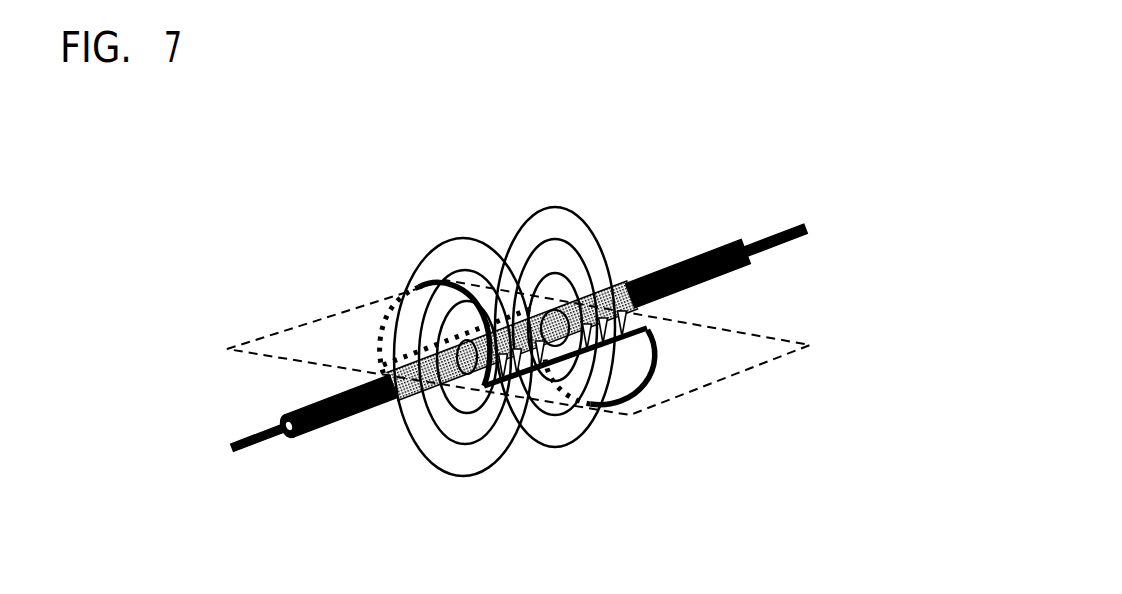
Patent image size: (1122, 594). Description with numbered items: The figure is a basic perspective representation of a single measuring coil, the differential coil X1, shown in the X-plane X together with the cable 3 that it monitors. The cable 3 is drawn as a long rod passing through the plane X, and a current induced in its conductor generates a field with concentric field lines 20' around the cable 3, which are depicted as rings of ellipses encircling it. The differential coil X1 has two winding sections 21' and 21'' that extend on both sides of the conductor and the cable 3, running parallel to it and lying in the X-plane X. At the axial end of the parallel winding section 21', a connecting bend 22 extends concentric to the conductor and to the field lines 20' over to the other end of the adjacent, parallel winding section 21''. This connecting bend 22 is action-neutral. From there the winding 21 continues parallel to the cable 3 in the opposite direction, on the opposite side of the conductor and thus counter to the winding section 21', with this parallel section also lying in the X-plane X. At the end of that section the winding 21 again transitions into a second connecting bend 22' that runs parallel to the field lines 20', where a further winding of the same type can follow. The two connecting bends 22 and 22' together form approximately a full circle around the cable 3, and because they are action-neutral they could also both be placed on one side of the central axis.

The cable 3 is at (714, 228).
The X-plane X is at (743, 370).
The differential coil X1 is at (393, 238).
The field lines 20' is at (401, 397).
The connecting bend 22 is at (516, 241).
The winding section 21' is at (340, 322).
The winding 21 is at (718, 331).
The connecting bend 22' is at (694, 416).
The winding section 21'' is at (622, 465).